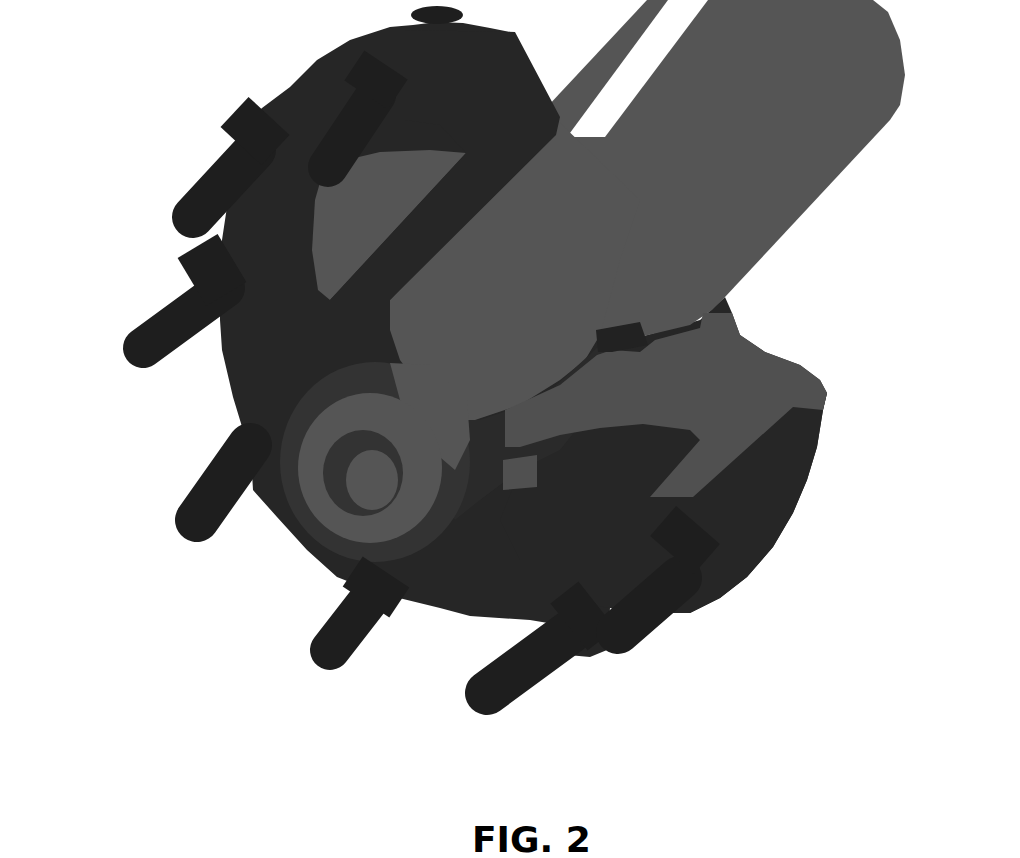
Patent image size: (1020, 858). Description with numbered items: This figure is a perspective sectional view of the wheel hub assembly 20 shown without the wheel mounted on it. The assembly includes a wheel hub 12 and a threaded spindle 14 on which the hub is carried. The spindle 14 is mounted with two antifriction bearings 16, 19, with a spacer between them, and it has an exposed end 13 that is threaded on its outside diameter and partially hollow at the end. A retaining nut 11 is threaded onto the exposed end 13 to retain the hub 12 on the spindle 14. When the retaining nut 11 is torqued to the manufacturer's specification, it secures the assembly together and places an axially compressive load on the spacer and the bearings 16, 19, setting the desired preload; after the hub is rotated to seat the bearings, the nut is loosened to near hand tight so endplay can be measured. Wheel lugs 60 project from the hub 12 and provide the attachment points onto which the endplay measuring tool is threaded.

The retaining nut 11 is at (293, 507).
The hub 12 is at (812, 393).
The exposed end 13 is at (310, 547).
The spindle 14 is at (795, 228).
The antifriction bearing 16 is at (483, 470).
The antifriction bearing 19 is at (612, 352).
The wheel hub assembly 20 is at (822, 457).
The wheel lugs 60 is at (120, 362).